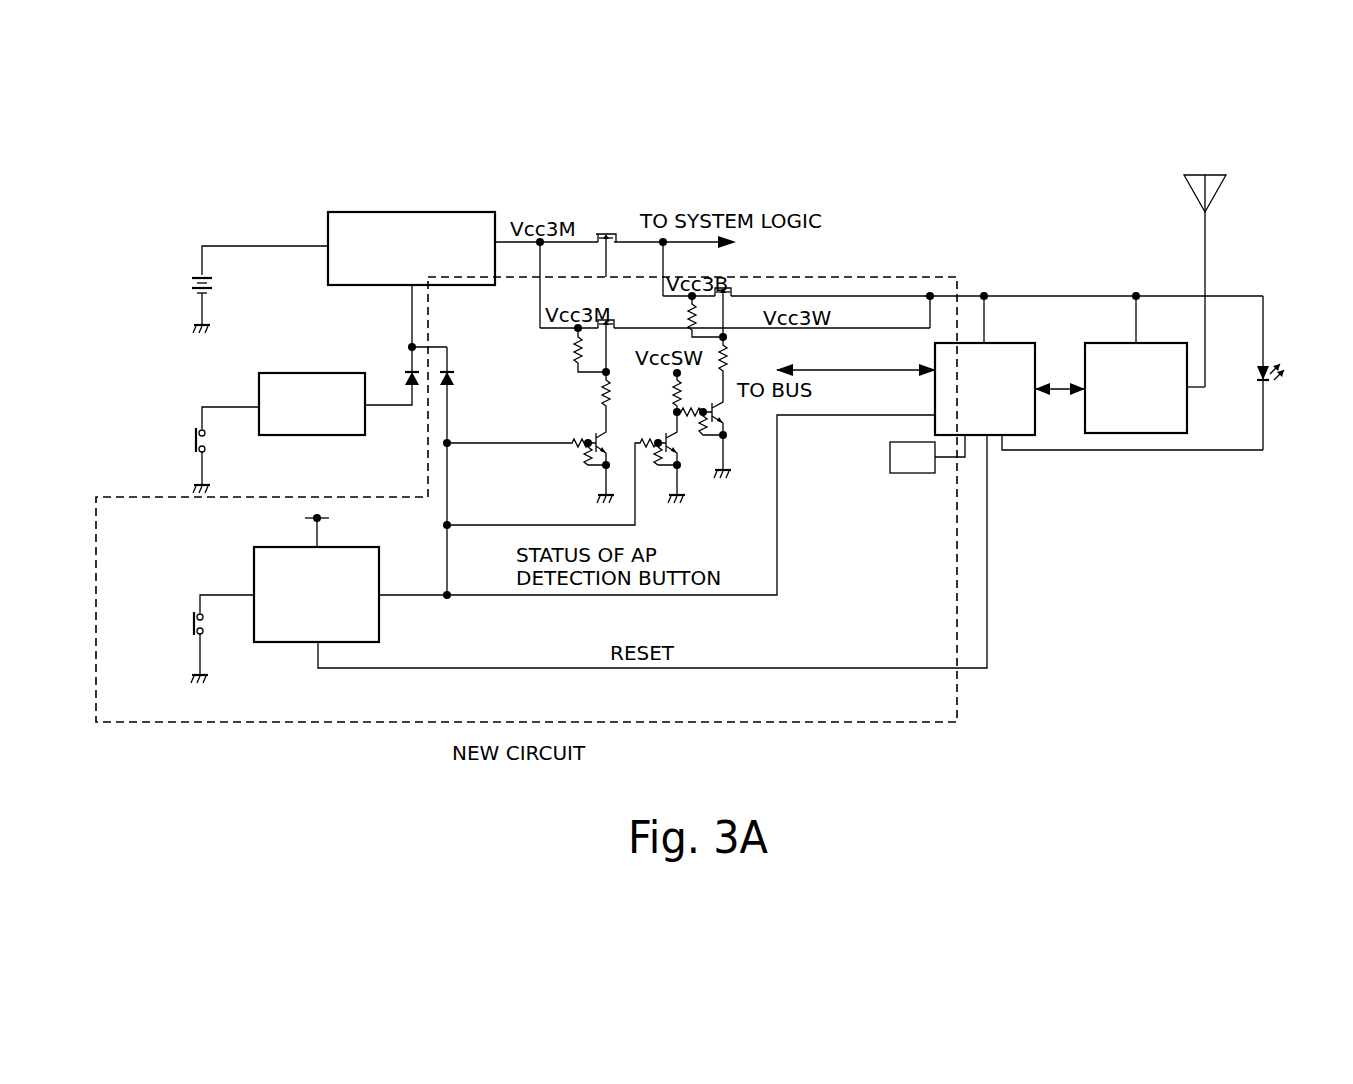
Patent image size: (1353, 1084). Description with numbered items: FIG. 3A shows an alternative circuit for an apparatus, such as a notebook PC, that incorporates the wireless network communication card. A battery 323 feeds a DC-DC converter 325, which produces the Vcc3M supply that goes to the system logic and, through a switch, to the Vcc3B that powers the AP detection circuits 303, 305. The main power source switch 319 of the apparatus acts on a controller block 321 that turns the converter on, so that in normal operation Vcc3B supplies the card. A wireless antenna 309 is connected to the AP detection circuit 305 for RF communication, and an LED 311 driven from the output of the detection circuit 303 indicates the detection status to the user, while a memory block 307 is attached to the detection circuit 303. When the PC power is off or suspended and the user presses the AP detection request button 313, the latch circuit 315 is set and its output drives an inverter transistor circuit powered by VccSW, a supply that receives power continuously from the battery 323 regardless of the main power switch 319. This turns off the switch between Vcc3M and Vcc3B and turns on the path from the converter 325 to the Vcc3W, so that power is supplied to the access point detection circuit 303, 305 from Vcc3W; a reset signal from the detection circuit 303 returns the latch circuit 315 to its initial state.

The AP detection circuit 303 is at (1003, 343).
The AP detection circuit 305 is at (1158, 343).
The memory 307 is at (890, 458).
The wireless antenna 309 is at (1211, 175).
The LED 311 is at (1278, 364).
The AP detection request button 313 is at (189, 624).
The latch circuit 315 is at (254, 563).
The main power source switch 319 is at (192, 441).
The power switch controller 321 is at (312, 373).
The battery 323 is at (192, 290).
The DC-DC converter 325 is at (434, 212).